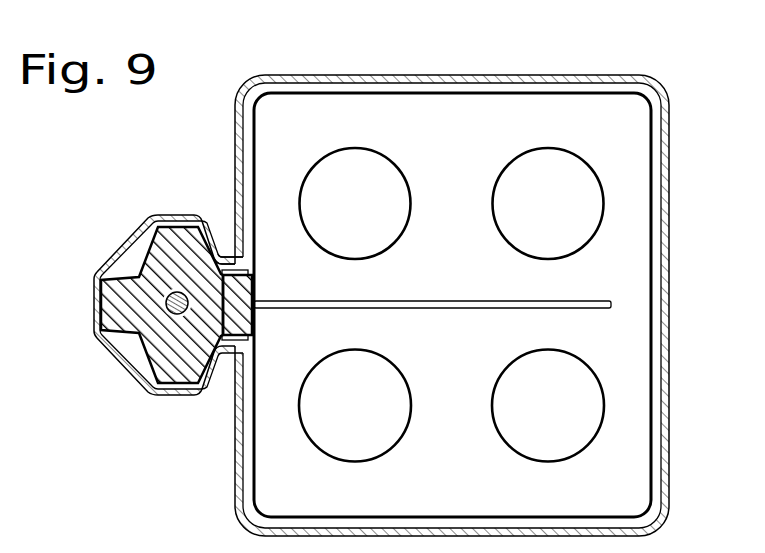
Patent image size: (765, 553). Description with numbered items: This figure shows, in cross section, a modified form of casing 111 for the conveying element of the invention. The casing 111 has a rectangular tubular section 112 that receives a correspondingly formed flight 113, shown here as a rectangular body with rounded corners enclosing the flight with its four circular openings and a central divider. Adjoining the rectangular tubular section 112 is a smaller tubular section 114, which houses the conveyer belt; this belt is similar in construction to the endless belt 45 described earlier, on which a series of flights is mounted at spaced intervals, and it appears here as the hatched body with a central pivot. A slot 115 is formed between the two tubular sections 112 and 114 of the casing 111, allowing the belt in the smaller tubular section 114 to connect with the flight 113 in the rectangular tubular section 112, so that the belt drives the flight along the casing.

The casing 111 is at (664, 100).
The rectangular tubular section 112 is at (667, 331).
The flight 113 is at (432, 299).
The smaller tubular section 114 is at (118, 258).
The slot 115 is at (225, 250).
The endless belt 45 is at (146, 336).